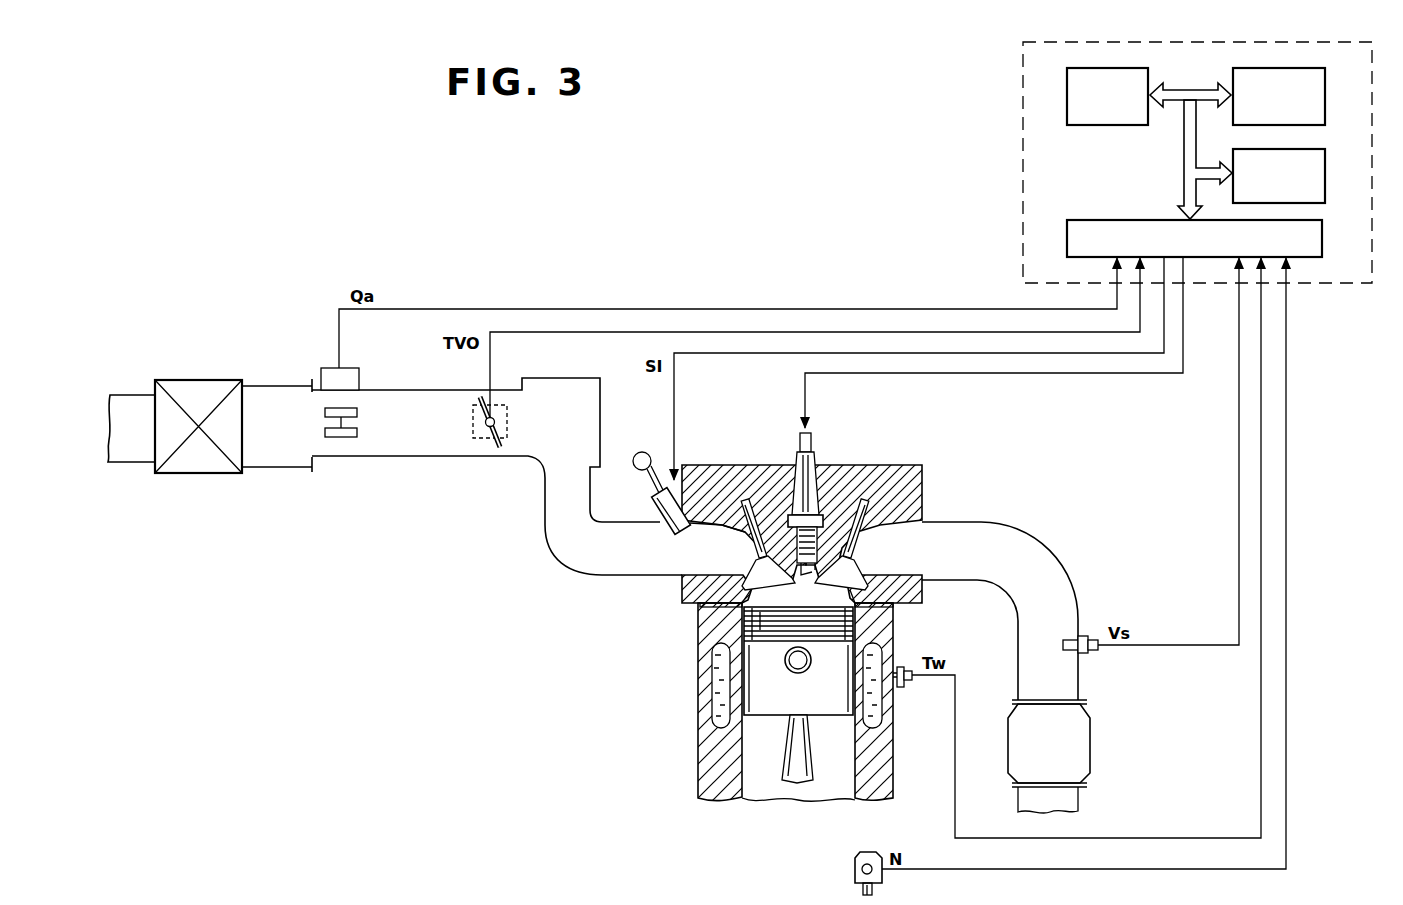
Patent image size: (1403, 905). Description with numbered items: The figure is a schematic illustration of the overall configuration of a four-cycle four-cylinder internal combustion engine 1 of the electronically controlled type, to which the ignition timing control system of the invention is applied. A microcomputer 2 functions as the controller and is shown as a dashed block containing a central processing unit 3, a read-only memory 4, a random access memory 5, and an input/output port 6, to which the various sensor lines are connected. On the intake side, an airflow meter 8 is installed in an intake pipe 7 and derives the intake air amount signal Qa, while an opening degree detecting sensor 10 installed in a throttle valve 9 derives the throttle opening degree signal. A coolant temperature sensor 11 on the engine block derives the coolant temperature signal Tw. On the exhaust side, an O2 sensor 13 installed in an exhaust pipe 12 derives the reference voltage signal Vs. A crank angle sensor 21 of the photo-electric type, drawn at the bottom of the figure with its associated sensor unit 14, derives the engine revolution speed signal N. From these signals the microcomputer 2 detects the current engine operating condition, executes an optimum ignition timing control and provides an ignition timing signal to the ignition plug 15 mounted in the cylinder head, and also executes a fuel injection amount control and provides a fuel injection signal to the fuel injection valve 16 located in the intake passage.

The internal combustion engine 1 is at (690, 738).
The microcomputer 2 is at (1023, 85).
The central processing unit 3 is at (1108, 125).
The read-only memory 4 is at (1325, 94).
The random access memory 5 is at (1325, 177).
The input/output port 6 is at (1092, 220).
The intake pipe 7 is at (373, 458).
The airflow meter 8 is at (359, 368).
The throttle valve 9 is at (490, 448).
The opening degree detecting sensor 10 is at (474, 424).
The coolant temperature sensor 11 is at (905, 690).
The exhaust pipe 12 is at (1060, 566).
The O2 sensor 13 is at (1097, 652).
The crank angle sensor 14 is at (855, 858).
The ignition plug 15 is at (793, 540).
The fuel injection valve 16 is at (662, 508).
The crank angle sensor 21 is at (862, 870).